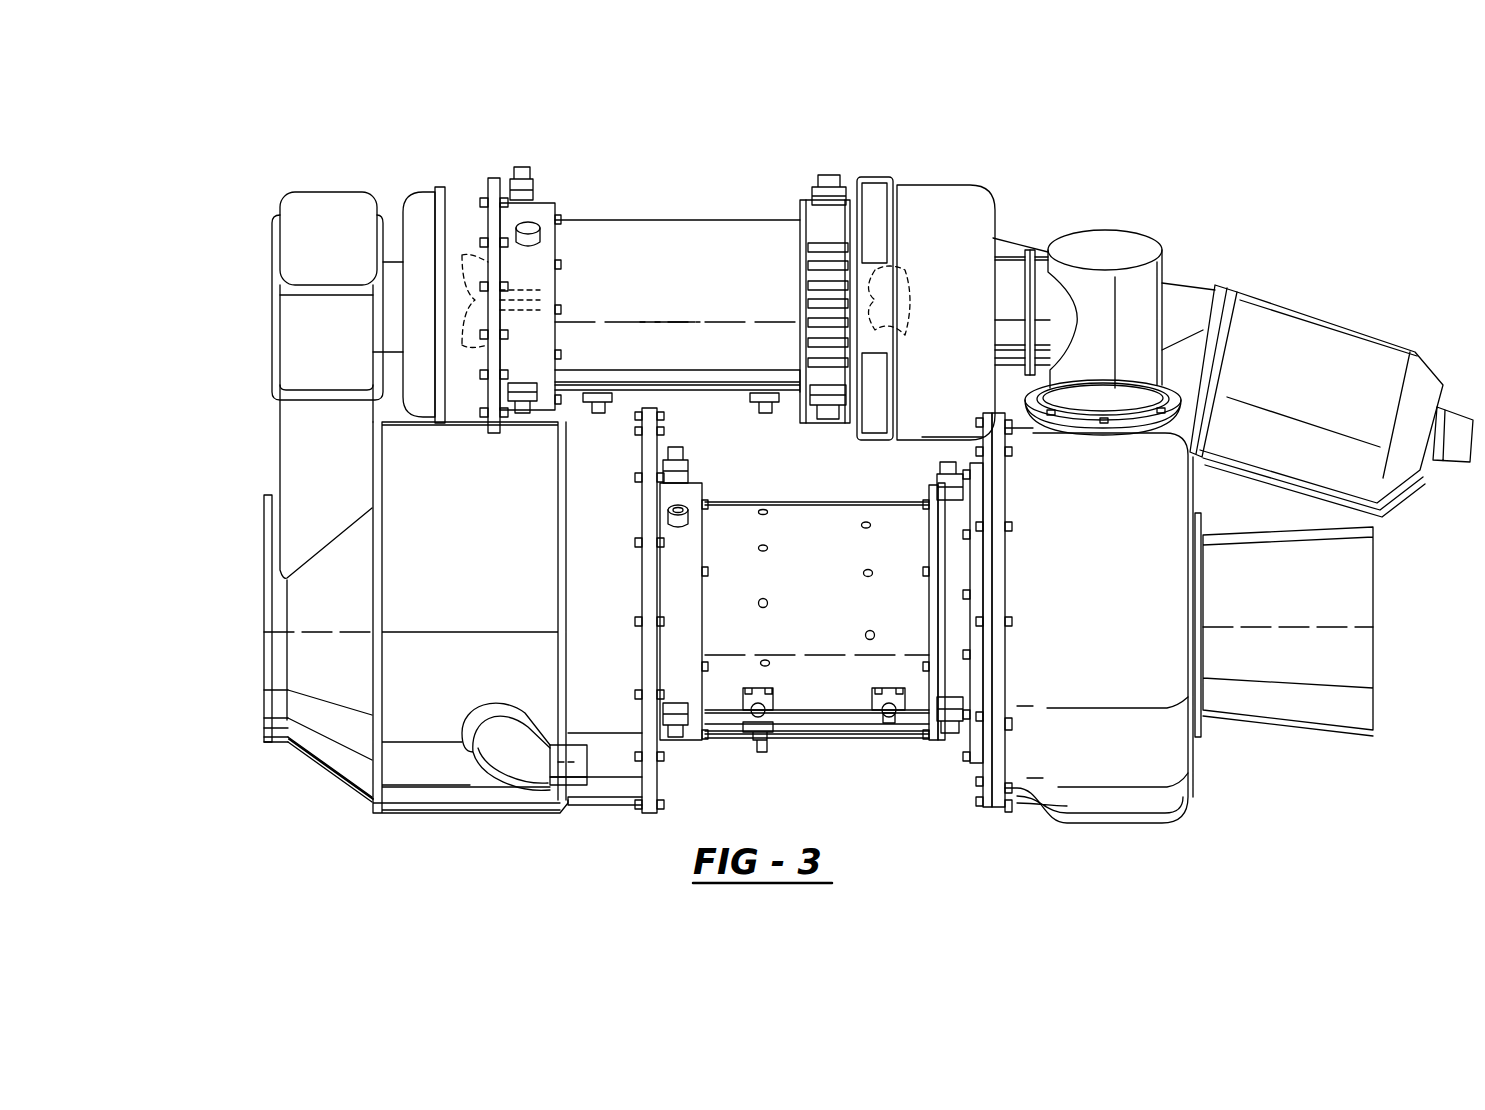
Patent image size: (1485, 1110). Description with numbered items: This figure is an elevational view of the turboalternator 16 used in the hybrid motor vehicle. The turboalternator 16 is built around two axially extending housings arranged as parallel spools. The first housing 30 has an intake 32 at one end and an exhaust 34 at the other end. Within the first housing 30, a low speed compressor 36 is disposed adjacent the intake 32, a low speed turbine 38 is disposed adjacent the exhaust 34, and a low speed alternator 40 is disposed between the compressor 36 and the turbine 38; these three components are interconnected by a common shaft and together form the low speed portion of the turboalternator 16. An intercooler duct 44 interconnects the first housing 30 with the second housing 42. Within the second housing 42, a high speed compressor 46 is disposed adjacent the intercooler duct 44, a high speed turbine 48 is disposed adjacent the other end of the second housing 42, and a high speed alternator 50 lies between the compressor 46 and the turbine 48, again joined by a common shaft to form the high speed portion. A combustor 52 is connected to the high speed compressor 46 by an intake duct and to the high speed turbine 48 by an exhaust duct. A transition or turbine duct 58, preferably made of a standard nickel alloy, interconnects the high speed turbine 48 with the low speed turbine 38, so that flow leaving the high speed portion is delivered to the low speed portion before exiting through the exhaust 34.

The turboalternator 16 is at (1055, 185).
The first housing 30 is at (588, 807).
The intake 32 is at (264, 690).
The exhaust 34 is at (1290, 702).
The low speed compressor 36 is at (405, 773).
The low speed turbine 38 is at (1172, 812).
The low speed alternator 40 is at (822, 697).
The second housing 42 is at (597, 215).
The intercooler duct 44 is at (292, 335).
The high speed compressor 46 is at (466, 210).
The high speed turbine 48 is at (918, 190).
The high speed alternator 50 is at (718, 246).
The combustor 52 is at (1305, 330).
The turbine duct 58 is at (1160, 298).